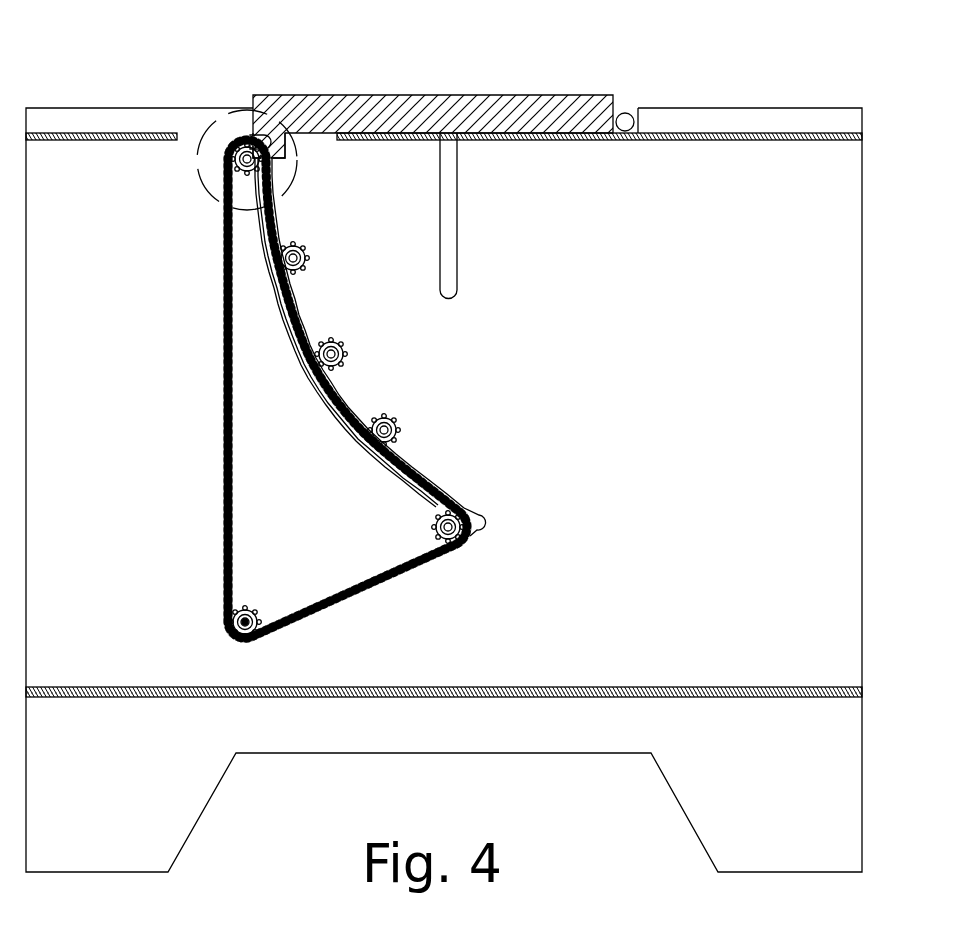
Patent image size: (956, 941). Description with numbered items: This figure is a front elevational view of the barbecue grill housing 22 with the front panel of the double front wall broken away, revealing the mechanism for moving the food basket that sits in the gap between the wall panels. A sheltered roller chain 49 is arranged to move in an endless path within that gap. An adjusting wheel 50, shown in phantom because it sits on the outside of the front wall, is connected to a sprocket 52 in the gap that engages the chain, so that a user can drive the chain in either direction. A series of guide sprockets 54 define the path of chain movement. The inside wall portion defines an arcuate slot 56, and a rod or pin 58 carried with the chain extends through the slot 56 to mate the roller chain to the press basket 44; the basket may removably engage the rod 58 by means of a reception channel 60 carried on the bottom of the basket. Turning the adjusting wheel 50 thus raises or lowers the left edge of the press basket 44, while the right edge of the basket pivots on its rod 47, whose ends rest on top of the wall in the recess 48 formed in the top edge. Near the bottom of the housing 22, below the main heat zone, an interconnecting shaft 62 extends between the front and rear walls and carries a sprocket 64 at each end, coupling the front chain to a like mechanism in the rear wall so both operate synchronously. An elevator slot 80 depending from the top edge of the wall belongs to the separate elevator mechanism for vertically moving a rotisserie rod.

The housing 22 is at (722, 108).
The press basket 44 is at (490, 95).
The rod 47 is at (626, 140).
The recess 48 is at (622, 113).
The roller chain 49 is at (388, 583).
The adjusting wheel 50 is at (196, 172).
The sprocket 52 is at (238, 170).
The guide sprockets 54 is at (308, 253).
The arcuate slot 56 is at (483, 514).
The rod or pin 58 is at (253, 135).
The reception channel 60 is at (287, 152).
The interconnecting shaft 62 is at (230, 624).
The sprocket 64 is at (252, 610).
The elevator slot 80 is at (452, 228).